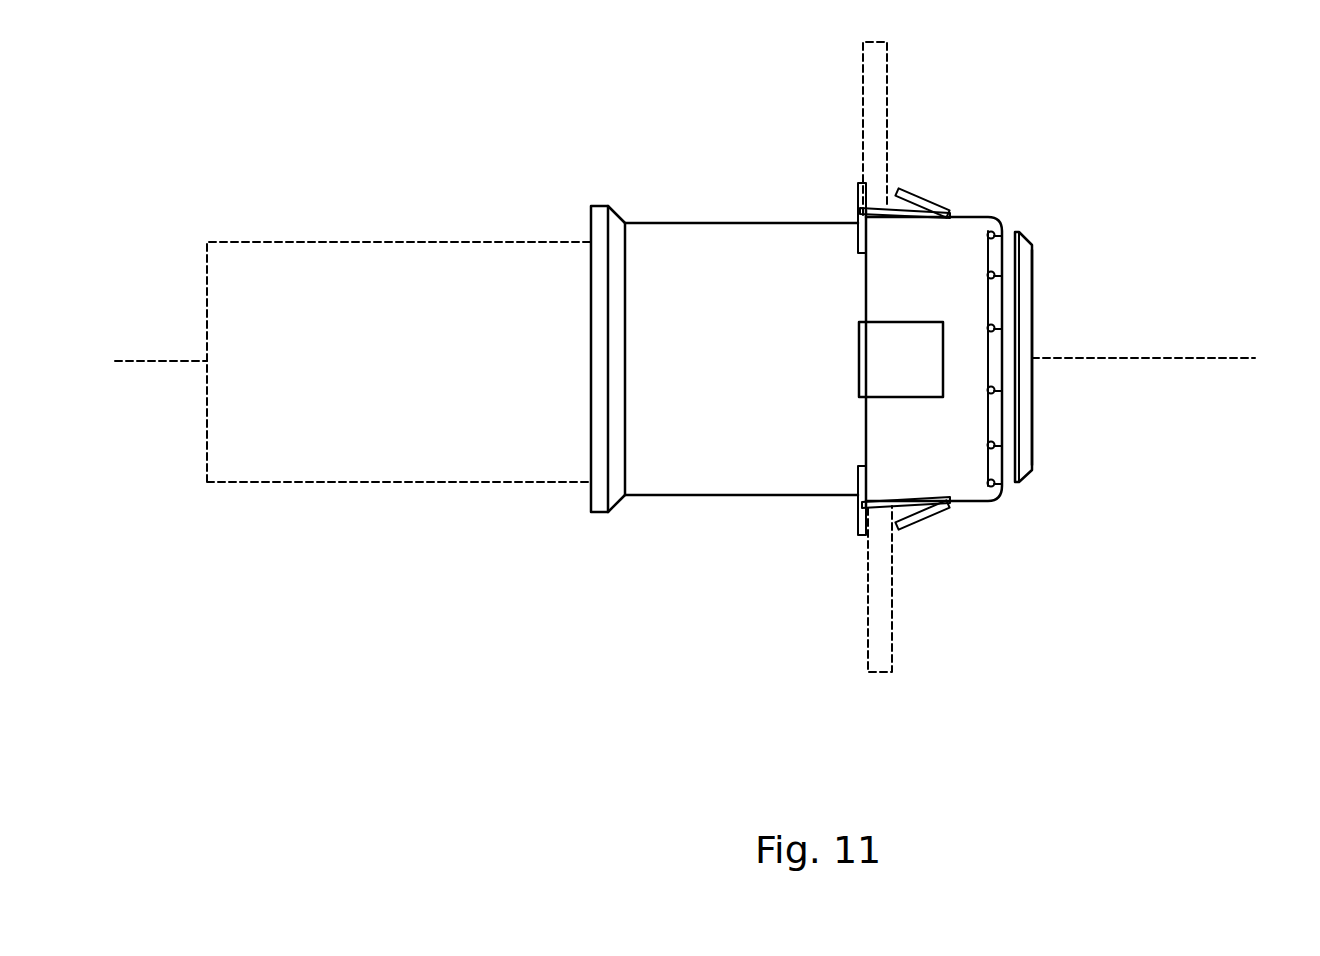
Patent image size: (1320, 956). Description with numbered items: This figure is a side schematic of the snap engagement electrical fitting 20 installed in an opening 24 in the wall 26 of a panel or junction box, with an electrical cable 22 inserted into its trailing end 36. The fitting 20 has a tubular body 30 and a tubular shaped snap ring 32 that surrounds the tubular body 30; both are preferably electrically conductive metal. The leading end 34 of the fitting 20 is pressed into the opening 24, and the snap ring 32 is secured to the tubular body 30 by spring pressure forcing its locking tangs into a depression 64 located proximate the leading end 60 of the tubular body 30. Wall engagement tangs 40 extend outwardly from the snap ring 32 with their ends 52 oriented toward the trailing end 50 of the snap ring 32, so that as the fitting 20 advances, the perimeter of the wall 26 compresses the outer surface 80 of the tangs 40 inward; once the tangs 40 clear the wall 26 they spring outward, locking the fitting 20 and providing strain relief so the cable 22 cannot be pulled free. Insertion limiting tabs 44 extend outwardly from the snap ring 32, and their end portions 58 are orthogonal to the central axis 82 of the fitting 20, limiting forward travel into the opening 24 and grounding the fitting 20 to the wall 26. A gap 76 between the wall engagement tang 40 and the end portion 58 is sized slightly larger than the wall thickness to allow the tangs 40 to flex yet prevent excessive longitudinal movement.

The snap engagement electrical fitting 20 is at (1086, 246).
The electrical cable 22 is at (380, 373).
The opening 24 is at (918, 500).
The wall 26 is at (877, 58).
The tubular body 30 is at (725, 381).
The snap ring 32 is at (908, 290).
The leading end 34 is at (1032, 297).
The trailing end 36 is at (590, 225).
The wall engagement tang 40 is at (928, 203).
The insertion limiting tab 44 is at (894, 371).
The trailing end of the snap ring 50 is at (862, 290).
The ends of the wall engagement tangs 52 is at (887, 203).
The end portion of the insertion limiting tab 58 is at (865, 357).
The leading end of the tubular body 60 is at (1032, 405).
The depression 64 is at (1008, 478).
The gap 76 is at (875, 197).
The outer surface of the wall engagement tangs 80 is at (914, 190).
The central axis of the fitting 82 is at (1182, 360).